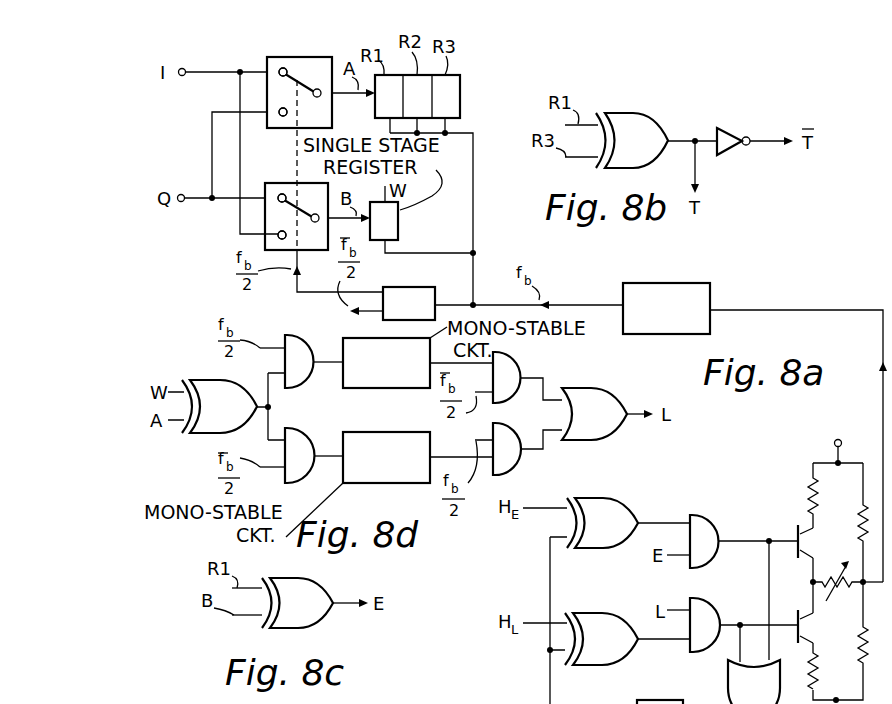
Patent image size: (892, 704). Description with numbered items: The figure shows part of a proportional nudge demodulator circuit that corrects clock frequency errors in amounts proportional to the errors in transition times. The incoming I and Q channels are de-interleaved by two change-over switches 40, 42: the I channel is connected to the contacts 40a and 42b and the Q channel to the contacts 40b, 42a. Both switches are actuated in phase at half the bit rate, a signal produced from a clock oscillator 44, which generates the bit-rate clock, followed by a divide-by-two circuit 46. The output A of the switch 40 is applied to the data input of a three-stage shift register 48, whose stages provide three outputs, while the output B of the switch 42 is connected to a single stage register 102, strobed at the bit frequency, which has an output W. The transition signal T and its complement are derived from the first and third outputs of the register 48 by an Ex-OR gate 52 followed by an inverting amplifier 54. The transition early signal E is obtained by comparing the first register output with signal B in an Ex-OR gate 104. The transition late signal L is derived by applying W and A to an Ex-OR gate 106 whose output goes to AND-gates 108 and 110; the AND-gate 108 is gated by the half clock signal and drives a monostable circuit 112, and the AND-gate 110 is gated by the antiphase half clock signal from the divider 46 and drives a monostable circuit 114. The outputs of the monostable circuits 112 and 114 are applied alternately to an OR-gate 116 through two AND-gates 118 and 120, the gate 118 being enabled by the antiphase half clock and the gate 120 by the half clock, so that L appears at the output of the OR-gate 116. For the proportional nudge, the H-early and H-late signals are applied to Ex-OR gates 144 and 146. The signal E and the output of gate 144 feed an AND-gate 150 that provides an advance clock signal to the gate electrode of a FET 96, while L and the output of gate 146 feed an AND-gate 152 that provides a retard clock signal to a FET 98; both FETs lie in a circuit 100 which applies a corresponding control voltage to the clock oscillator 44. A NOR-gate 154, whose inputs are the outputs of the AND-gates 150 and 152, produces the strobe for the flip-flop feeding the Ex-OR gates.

In FIG. 8a, the change-over switch 40 is at (313, 52).
In FIG. 8a, the contact of switch 40 40a is at (283, 60).
In FIG. 8a, the contact of switch 40 40b is at (284, 120).
In FIG. 8a, the change-over switch 42 is at (313, 246).
In FIG. 8a, the contact of switch 42 42a is at (283, 190).
In FIG. 8a, the contact of switch 42 42b is at (265, 220).
In FIG. 8a, the clock oscillator 44 is at (683, 286).
In FIG. 8a, the divide-by-two circuit 46 is at (418, 292).
In FIG. 8a, the three-stage shift register 48 is at (462, 101).
In FIG. 8b, the Ex-OR gate 52 is at (640, 125).
In FIG. 8b, the inverting amplifier 54 is at (728, 130).
In FIG. 8a, the FET 96 is at (806, 536).
In FIG. 8a, the FET 98 is at (806, 622).
In FIG. 8a, the circuit 100 is at (813, 447).
In FIG. 8a, the single stage register 102 is at (399, 219).
In FIG. 8c, the Ex-OR gate 104 is at (318, 596).
In FIG. 8d, the Ex-OR gate 106 is at (208, 381).
In FIG. 8d, the AND-gate 108 is at (300, 380).
In FIG. 8d, the AND-gate 110 is at (300, 446).
In FIG. 8d, the monostable circuit 112 is at (373, 382).
In FIG. 8d, the monostable circuit 114 is at (372, 481).
In FIG. 8d, the OR-gate 116 is at (600, 400).
In FIG. 8d, the AND-gate 118 is at (515, 373).
In FIG. 8d, the AND-gate 120 is at (515, 453).
In FIG. 8a, the Ex-OR gate 144 is at (618, 510).
In FIG. 8a, the Ex-OR gate 146 is at (618, 649).
In FIG. 8a, the AND-gate 150 is at (708, 530).
In FIG. 8a, the AND-gate 152 is at (708, 615).
In FIG. 8a, the NOR-gate 154 is at (740, 698).